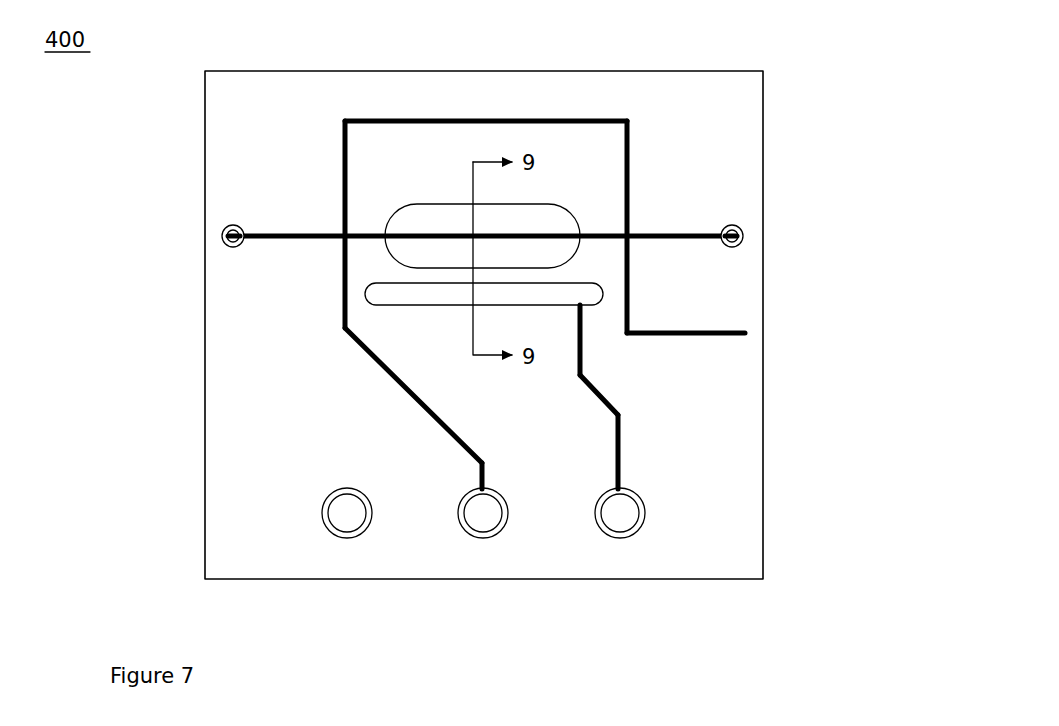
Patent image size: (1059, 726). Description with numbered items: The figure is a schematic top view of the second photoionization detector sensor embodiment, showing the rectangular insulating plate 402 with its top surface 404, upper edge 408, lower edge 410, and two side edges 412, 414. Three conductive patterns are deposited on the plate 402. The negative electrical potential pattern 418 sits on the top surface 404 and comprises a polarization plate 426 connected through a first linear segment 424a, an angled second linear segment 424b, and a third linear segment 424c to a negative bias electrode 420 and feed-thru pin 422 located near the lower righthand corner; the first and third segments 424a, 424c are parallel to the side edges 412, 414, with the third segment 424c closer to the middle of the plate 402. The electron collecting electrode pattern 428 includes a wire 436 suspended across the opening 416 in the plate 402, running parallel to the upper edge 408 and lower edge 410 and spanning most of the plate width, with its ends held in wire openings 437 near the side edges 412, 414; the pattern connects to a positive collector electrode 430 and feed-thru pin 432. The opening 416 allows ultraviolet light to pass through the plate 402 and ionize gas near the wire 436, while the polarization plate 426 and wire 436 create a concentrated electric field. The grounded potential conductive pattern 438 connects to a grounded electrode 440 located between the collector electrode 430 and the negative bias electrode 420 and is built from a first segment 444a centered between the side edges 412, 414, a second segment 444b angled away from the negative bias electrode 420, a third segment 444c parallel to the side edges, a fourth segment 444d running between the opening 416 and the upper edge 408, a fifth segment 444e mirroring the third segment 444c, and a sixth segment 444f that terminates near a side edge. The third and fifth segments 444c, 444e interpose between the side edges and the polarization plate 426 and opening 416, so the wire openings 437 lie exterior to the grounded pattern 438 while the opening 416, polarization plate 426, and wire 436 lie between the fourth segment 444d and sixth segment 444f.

The plate 402 is at (240, 62).
The top surface 404 is at (235, 133).
The upper edge 408 is at (672, 71).
The lower edge 410 is at (268, 579).
The side edge 412 is at (205, 400).
The side edge 414 is at (763, 105).
The opening 416 is at (425, 200).
The negative electrical potential pattern 418 is at (625, 450).
The negative bias electrode 420 is at (645, 520).
The feed-thru pin 422 is at (490, 520).
The first linear segment 424a is at (615, 432).
The second linear segment 424b is at (605, 398).
The third linear segment 424c is at (578, 368).
The polarization plate 426 is at (385, 292).
The electron collecting electrode pattern 428 is at (274, 226).
The positive collector electrode 430 is at (322, 513).
The feed-thru pin 432 is at (347, 520).
The wire 436 is at (300, 240).
The wire opening 437 is at (222, 237).
The grounded potential conductive pattern 438 is at (540, 112).
The grounded electrode 440 is at (470, 538).
The first segment 444a is at (470, 475).
The second segment 444b is at (410, 396).
The third segment 444c is at (345, 312).
The fourth segment 444d is at (375, 121).
The fifth segment 444e is at (627, 172).
The sixth segment 444f is at (690, 333).